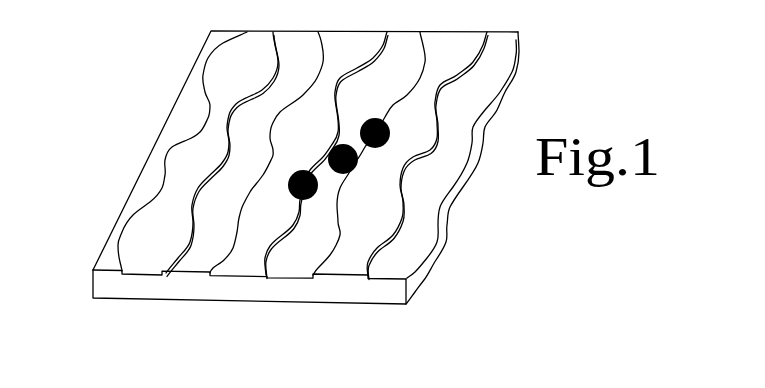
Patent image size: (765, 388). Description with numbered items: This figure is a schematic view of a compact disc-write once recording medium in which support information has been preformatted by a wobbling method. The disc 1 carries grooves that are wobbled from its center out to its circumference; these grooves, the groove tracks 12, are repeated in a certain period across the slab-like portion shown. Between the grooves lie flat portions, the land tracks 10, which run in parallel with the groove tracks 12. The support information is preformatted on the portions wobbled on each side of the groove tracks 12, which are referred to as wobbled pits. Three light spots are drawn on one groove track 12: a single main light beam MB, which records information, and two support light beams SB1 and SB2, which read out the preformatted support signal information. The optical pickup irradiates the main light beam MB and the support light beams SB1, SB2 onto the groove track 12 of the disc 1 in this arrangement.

The disc 1 is at (278, 179).
The land tracks 10 is at (146, 258).
The groove tracks 12 is at (297, 259).
The support light beam SB1 is at (295, 170).
The main light beam MB is at (333, 146).
The support light beam SB2 is at (389, 127).